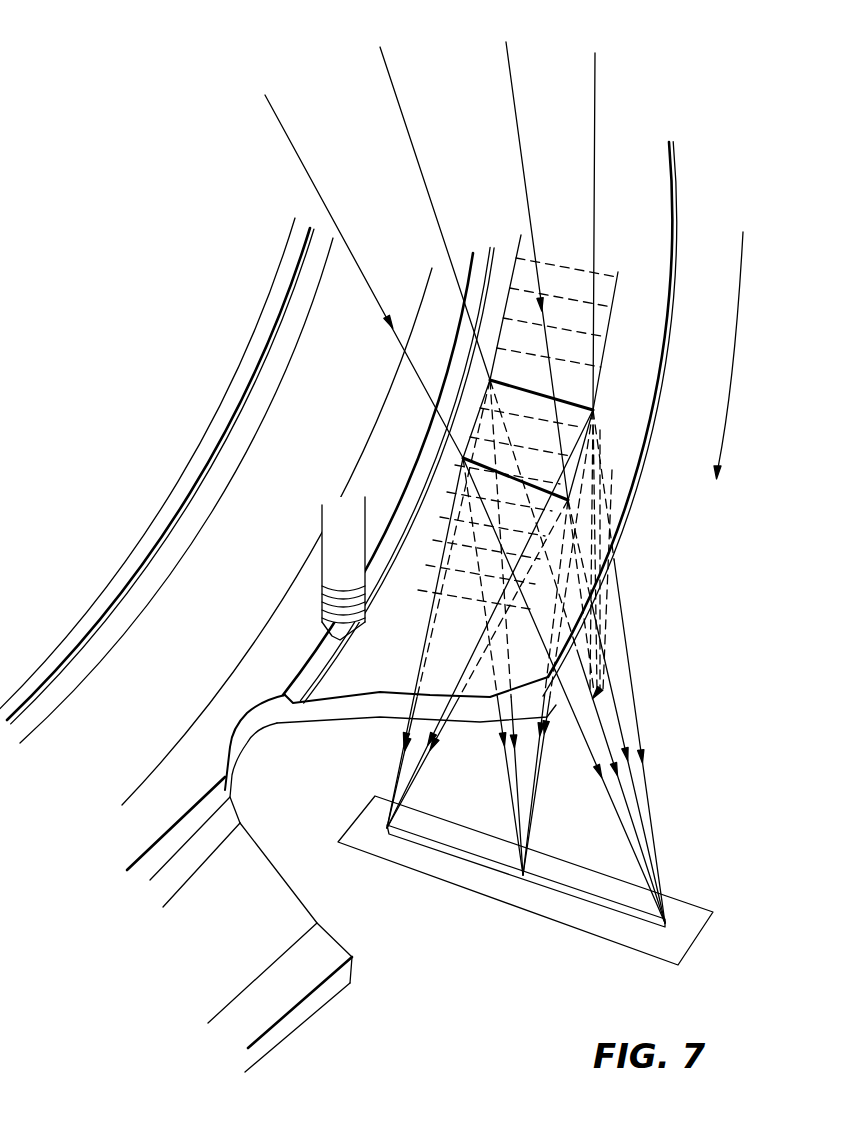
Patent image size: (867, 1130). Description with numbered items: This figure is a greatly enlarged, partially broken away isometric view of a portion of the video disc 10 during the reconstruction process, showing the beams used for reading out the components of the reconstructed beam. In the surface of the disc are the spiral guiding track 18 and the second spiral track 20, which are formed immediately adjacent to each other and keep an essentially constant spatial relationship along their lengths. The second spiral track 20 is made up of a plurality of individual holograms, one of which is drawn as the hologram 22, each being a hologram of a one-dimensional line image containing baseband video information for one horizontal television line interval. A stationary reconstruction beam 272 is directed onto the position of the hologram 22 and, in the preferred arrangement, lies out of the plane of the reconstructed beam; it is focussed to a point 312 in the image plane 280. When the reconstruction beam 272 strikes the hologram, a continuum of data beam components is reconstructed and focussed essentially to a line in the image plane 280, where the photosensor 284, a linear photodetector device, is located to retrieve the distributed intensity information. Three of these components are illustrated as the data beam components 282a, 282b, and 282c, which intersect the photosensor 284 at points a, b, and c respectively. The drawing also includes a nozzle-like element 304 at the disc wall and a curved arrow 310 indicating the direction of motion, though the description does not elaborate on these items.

The video disc 10 is at (312, 1013).
The spiral guiding track 18 is at (163, 848).
The second spiral track 20 is at (205, 938).
The hologram 22 is at (541, 388).
The reconstruction beam 272 is at (596, 147).
The image plane 280 is at (697, 937).
The data beam component 282a is at (430, 754).
The data beam component 282b is at (537, 806).
The data beam component 282c is at (655, 830).
The photosensor 284 is at (623, 913).
The nozzle 304 is at (326, 632).
The direction of rotation 310 is at (740, 330).
The point 312 is at (600, 692).